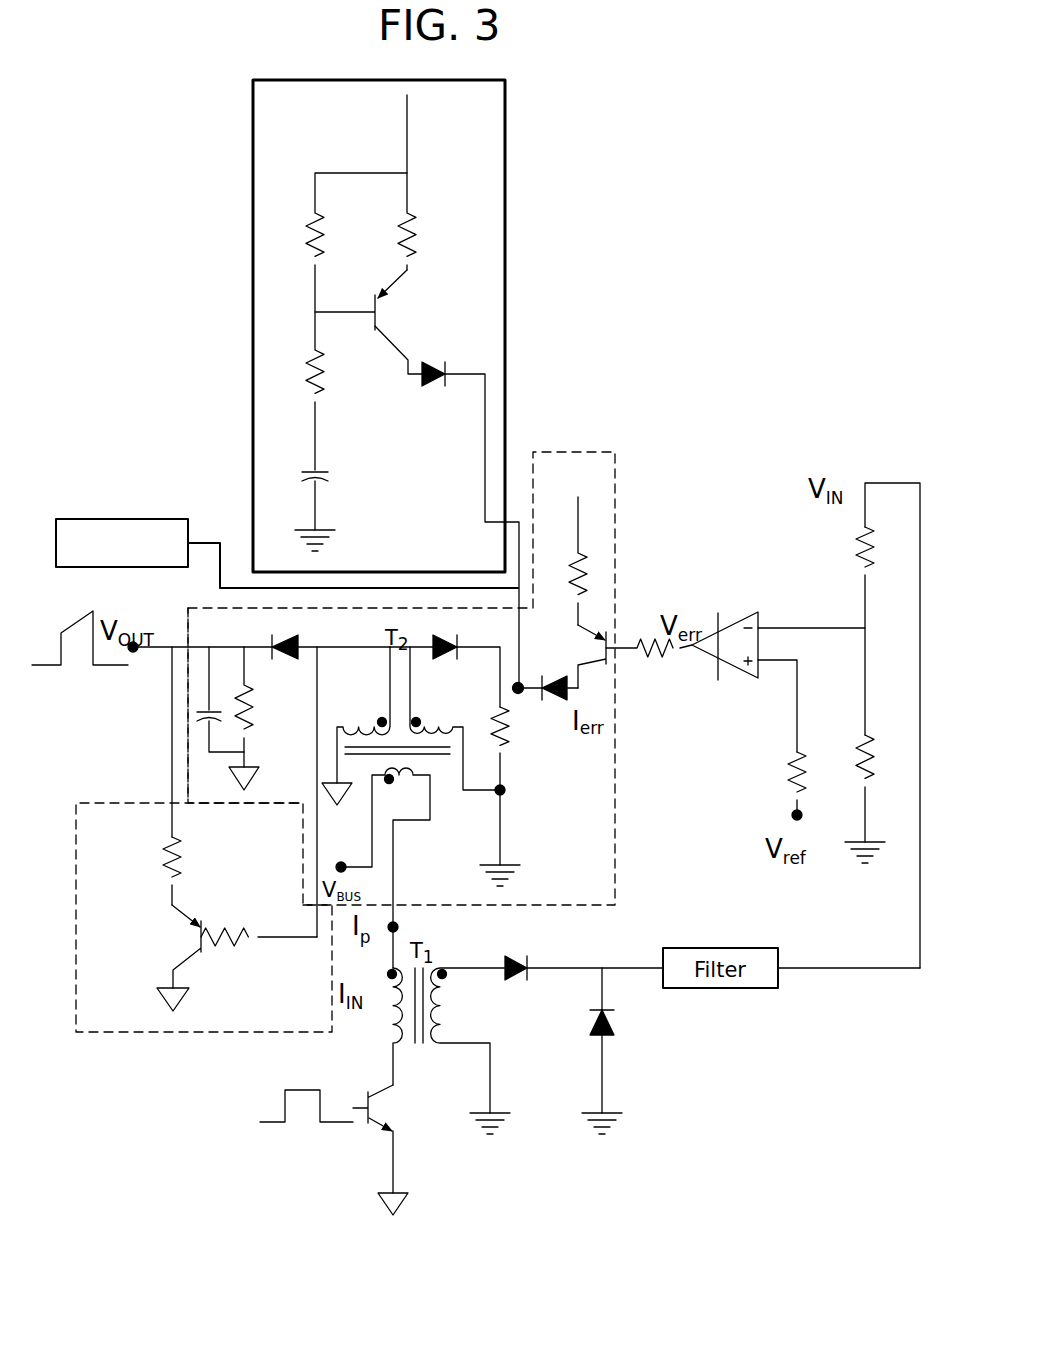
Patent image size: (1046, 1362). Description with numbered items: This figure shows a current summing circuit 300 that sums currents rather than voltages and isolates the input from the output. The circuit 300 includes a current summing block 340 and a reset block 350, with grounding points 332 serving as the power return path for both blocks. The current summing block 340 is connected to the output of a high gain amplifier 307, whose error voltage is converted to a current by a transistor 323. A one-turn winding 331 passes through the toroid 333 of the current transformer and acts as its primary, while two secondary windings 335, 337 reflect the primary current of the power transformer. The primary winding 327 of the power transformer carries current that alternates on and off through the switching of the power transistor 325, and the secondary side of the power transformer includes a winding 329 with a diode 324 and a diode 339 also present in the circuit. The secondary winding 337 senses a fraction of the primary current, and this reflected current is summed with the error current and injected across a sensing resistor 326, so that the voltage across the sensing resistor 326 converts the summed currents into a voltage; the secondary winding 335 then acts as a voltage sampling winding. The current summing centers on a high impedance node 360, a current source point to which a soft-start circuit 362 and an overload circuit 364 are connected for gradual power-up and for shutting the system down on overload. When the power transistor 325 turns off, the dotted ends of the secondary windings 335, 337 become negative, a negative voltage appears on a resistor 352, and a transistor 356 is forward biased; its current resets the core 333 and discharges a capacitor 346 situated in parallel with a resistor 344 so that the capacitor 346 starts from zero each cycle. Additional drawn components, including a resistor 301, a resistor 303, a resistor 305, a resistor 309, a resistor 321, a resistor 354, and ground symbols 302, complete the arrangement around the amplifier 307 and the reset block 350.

The current summing circuit 300 is at (735, 149).
The resistor 301 is at (854, 556).
The ground 302 is at (515, 880).
The resistor 303 is at (846, 748).
The resistor 305 is at (786, 791).
The high gain amplifier 307 is at (738, 624).
The resistor 309 is at (600, 578).
The resistor R1 321 is at (643, 627).
The transistor 323 is at (596, 663).
The diode 324 is at (560, 699).
The power transistor 325 is at (370, 1122).
The sensing resistor 326 is at (506, 752).
The primary winding 327 is at (394, 1016).
The secondary winding of transformer T1 329 is at (445, 1045).
The one-turn winding 331 is at (385, 868).
The grounding points 332 is at (246, 778).
The toroid 333 is at (435, 760).
The secondary winding 335 is at (363, 715).
The secondary winding 337 is at (455, 718).
The diode 339 is at (285, 643).
The current summing block 340 is at (598, 512).
The resistor 344 is at (252, 710).
The capacitor 346 is at (188, 697).
The reset block 350 is at (96, 1015).
The resistor 352 is at (238, 946).
The resistor 354 is at (184, 860).
The transistor 356 is at (195, 937).
The high impedance node 360 is at (526, 684).
The soft-start circuit 362 is at (490, 198).
The overload circuit 364 is at (112, 518).